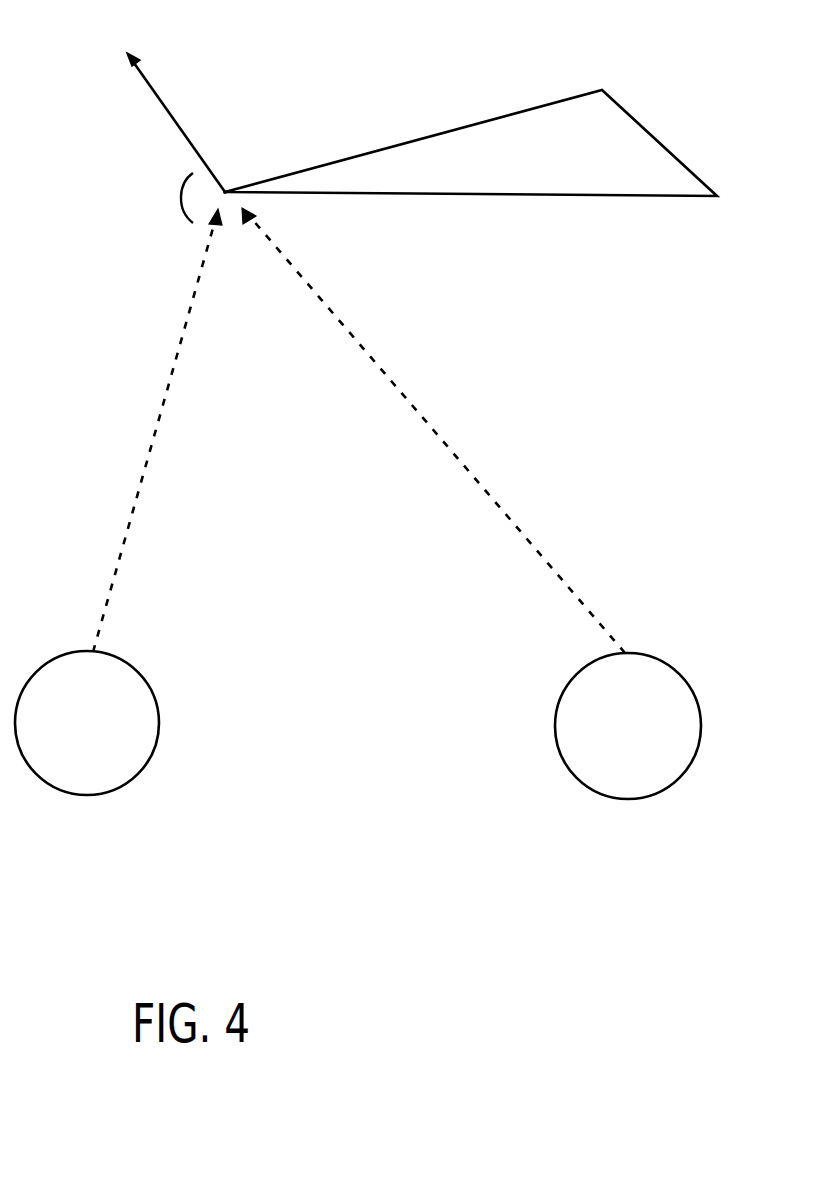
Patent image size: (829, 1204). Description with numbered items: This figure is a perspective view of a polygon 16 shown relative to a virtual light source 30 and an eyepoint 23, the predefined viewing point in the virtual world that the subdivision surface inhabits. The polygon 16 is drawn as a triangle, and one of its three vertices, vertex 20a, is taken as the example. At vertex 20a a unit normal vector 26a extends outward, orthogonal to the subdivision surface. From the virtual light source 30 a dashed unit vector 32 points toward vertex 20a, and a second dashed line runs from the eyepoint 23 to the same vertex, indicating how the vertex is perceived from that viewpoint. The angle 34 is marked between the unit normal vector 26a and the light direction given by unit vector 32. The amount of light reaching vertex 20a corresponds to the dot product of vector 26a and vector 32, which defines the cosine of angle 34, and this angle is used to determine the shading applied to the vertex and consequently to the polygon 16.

The polygon 16 is at (615, 137).
The vertex 20a is at (224, 178).
The unit normal vector 26a is at (155, 78).
The angle 34 is at (174, 210).
The unit vector 32 is at (162, 409).
The virtual light source 30 is at (147, 743).
The eyepoint 23 is at (687, 743).